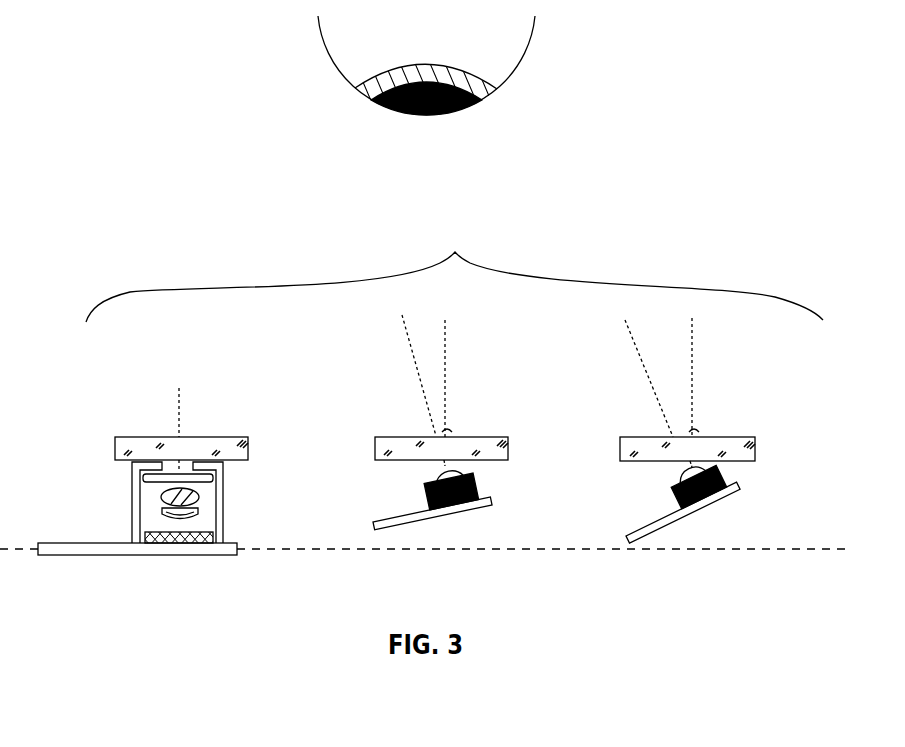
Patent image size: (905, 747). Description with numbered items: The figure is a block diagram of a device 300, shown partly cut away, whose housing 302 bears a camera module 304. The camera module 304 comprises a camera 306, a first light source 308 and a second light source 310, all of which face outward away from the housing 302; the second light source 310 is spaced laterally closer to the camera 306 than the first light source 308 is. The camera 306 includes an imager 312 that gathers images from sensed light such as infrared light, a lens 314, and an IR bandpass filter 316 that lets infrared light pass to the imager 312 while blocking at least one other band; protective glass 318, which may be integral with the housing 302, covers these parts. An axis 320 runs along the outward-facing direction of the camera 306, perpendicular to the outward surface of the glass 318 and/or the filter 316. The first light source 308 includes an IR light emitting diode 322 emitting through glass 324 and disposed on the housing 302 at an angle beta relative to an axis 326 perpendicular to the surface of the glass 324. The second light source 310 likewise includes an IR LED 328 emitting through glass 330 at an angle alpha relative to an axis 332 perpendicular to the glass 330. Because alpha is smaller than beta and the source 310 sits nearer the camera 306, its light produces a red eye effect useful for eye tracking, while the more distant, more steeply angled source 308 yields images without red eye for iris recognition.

The device 300 is at (246, 228).
The housing 302 is at (737, 551).
The camera module 304 is at (454, 276).
The camera 306 is at (228, 385).
The first light source 308 is at (760, 387).
The second light source 310 is at (500, 388).
The imager 312 is at (216, 539).
The lens 314 is at (190, 509).
The IR bandpass filter 316 is at (144, 478).
The glass 318 is at (115, 448).
The axis 320 is at (179, 403).
The IR light emitting diode 322 is at (727, 473).
The glass 324 is at (644, 437).
The axis 326 is at (694, 430).
The IR LED 328 is at (477, 479).
The glass 330 is at (393, 437).
The axis 332 is at (447, 430).